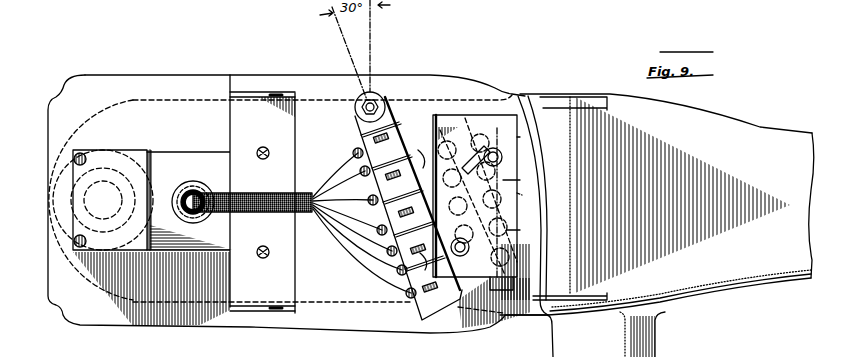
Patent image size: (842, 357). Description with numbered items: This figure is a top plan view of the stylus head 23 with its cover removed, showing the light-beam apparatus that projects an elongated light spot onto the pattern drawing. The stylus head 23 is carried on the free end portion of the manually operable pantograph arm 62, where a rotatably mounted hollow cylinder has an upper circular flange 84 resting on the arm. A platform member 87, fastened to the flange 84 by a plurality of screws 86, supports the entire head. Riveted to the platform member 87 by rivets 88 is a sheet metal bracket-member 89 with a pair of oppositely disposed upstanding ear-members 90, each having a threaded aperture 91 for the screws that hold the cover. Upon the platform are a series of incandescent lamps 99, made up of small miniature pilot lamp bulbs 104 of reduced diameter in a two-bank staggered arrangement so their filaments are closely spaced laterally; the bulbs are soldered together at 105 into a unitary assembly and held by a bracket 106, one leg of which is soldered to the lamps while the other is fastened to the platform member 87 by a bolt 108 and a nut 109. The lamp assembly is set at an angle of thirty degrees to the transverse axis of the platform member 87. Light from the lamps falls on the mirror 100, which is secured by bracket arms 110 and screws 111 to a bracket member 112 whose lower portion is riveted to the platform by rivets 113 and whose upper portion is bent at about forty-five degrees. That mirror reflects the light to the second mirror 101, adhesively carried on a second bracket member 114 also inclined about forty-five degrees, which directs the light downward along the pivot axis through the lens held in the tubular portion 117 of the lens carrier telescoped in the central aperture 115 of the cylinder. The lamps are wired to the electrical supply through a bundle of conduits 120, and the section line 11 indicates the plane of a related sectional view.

The section line 11 is at (107, 0).
The stylus head 23 is at (138, 66).
The pantograph arm 62 is at (768, 133).
The upper circular flange 84 is at (47, 177).
The screws 86 is at (84, 155).
The platform member 87 is at (290, 75).
The rivets 88 is at (269, 153).
The sheet metal bracket-member 89 is at (205, 157).
The ear-members 90 is at (238, 92).
The threaded aperture 91 is at (263, 95).
The incandescent lamps 99 is at (417, 110).
The mirror 100 is at (460, 124).
The second mirror 101 is at (157, 238).
The miniature pilot lamp bulbs 104 is at (423, 133).
The solder joint 105 is at (399, 210).
The bracket 106 is at (353, 117).
The bolt 108 is at (380, 100).
The nut 109 is at (372, 100).
The bracket arms 110 is at (503, 125).
The screws 111 is at (503, 163).
The bracket member 112 is at (520, 180).
The rivets 113 is at (522, 137).
The second bracket member 114 is at (110, 227).
The central aperture 115 is at (83, 222).
The tubular portion 117 is at (88, 202).
The bundle of conduits 120 is at (303, 192).